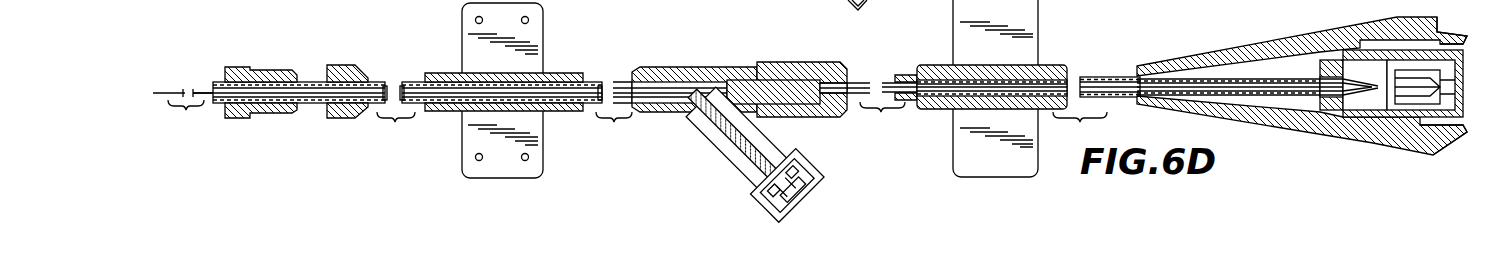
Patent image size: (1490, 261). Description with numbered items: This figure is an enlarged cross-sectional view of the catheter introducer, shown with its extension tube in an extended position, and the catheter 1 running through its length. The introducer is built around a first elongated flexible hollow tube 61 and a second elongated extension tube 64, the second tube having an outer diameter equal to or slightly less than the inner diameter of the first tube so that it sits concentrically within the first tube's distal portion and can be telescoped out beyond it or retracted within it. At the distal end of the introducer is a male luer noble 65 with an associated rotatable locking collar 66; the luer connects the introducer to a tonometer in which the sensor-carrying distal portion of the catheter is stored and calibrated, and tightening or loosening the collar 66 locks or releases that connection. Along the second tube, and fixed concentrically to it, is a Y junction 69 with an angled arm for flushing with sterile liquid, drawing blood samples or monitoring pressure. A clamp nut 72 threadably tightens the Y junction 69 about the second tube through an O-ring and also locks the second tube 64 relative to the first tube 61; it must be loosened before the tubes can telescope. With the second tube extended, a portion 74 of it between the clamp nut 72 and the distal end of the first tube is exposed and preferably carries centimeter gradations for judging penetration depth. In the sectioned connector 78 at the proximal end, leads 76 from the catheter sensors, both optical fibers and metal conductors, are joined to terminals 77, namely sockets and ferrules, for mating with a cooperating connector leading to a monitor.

The optical fiber 1 is at (165, 90).
The first elongated flexible hollow tube 61 is at (1118, 77).
The second elongated extension tube 64 is at (372, 70).
The male luer noble 65 is at (222, 104).
The rotatable locking collar 66 is at (262, 68).
The Y junction 69 is at (677, 66).
The clamp nut 72 is at (807, 62).
The exposed portion of the second tube 74 is at (907, 75).
The leads 76 is at (1353, 70).
The terminals 77 is at (1480, 103).
The connector 78 is at (1303, 130).